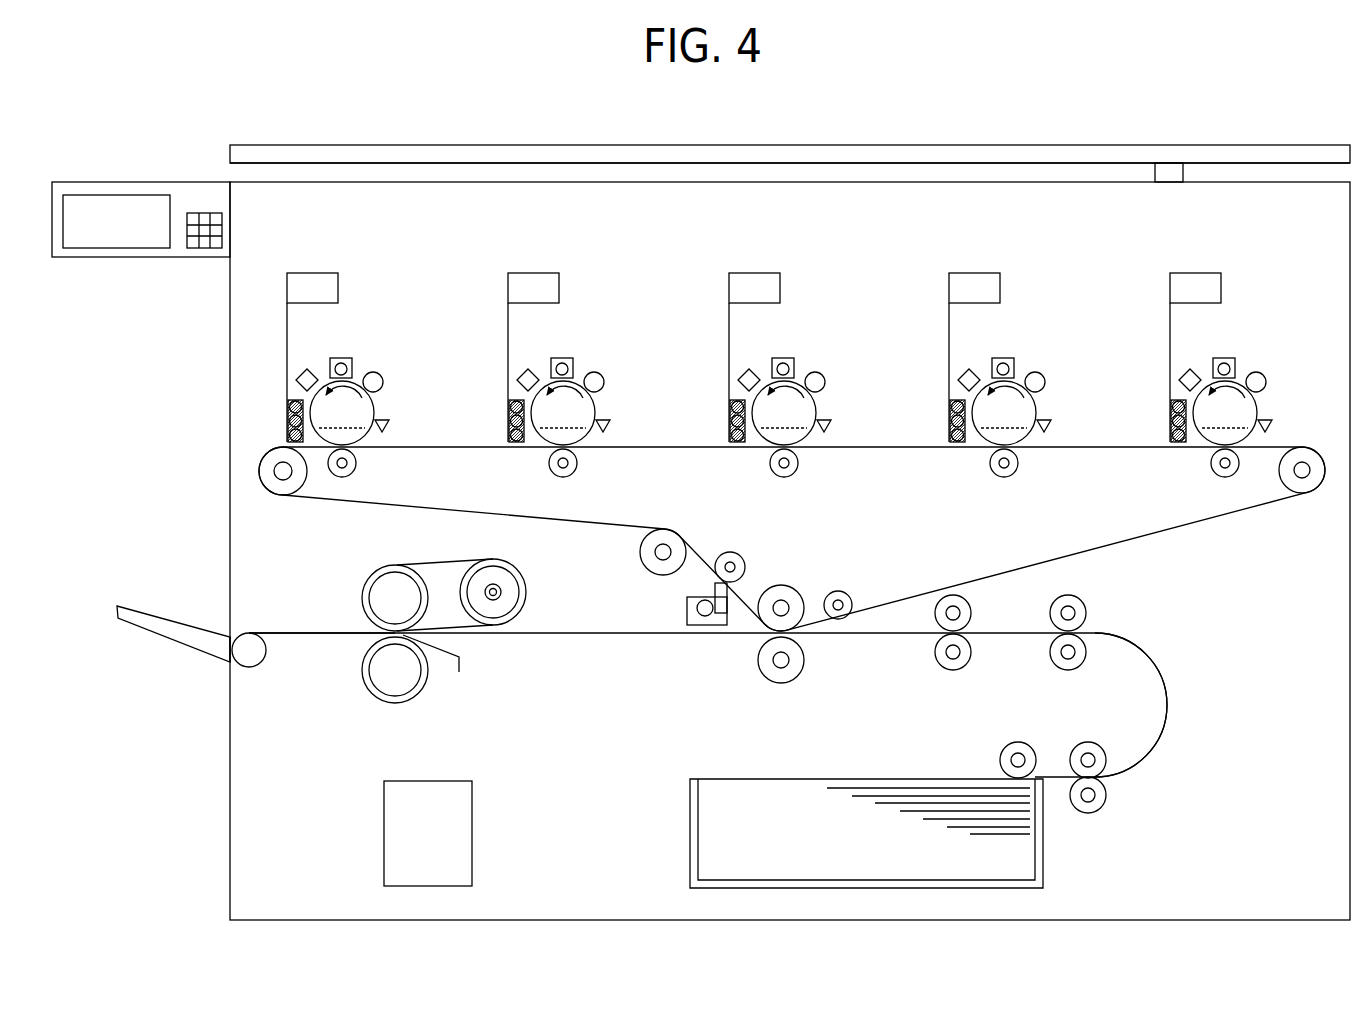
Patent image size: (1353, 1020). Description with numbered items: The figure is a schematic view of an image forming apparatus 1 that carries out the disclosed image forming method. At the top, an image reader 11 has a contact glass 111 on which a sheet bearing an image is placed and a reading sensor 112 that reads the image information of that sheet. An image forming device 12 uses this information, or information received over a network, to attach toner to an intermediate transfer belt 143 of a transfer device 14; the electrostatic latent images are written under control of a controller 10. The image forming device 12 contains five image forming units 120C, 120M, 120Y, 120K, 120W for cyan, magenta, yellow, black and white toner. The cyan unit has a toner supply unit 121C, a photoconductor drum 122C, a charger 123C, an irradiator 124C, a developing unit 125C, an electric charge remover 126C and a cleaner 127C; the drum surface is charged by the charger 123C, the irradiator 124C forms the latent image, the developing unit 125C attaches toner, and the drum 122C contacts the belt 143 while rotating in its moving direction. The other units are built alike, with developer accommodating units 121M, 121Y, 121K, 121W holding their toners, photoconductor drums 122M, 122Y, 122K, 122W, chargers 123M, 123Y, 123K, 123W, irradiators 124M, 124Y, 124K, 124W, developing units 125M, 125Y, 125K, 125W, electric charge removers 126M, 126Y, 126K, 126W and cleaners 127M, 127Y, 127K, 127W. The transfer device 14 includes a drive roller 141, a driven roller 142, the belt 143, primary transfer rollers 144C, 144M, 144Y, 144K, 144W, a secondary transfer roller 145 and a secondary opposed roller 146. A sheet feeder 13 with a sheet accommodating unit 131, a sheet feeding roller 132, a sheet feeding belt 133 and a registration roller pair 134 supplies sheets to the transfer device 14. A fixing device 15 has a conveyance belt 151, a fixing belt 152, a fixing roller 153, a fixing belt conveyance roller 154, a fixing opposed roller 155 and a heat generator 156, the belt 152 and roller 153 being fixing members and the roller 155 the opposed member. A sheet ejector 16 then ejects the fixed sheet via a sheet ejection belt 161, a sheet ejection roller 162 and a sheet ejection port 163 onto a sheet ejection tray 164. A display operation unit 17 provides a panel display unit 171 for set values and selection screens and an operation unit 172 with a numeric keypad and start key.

The image forming apparatus 1 is at (910, 121).
The controller 10 is at (384, 832).
The image reader 11 is at (1155, 100).
The contact glass 111 is at (1088, 184).
The reading sensor 112 is at (1156, 166).
The image forming device 12 is at (630, 252).
The image forming unit 120C is at (410, 322).
The image forming unit 120M is at (631, 322).
The image forming unit 120Y is at (852, 322).
The image forming unit 120K is at (1072, 322).
The image forming unit 120W is at (1285, 322).
The toner supply unit 121C is at (338, 278).
The developer accommodating unit 121M is at (534, 272).
The developer accommodating unit 121Y is at (755, 272).
The developer accommodating unit 121K is at (975, 272).
The developer accommodating unit 121W is at (1196, 272).
The photoconductor drum 122C is at (342, 413).
The photoconductor drum 122M is at (563, 413).
The photoconductor drum 122Y is at (784, 413).
The photoconductor drum 122K is at (1004, 413).
The photoconductor drum 122W is at (1225, 413).
The charger 123C is at (341, 357).
The charger 123M is at (562, 357).
The charger 123Y is at (783, 357).
The charger 123K is at (1003, 357).
The charger 123W is at (1224, 357).
The irradiator 124C is at (320, 375).
The irradiator 124M is at (541, 375).
The irradiator 124Y is at (762, 375).
The irradiator 124K is at (982, 375).
The irradiator 124W is at (1203, 375).
The developing unit 125C is at (288, 433).
The developing unit 125M is at (509, 434).
The developing unit 125Y is at (730, 434).
The developing unit 125K is at (950, 434).
The developing unit 125W is at (1171, 434).
The electric charge remover 126C is at (386, 418).
The electric charge remover 126M is at (607, 418).
The electric charge remover 126Y is at (828, 418).
The electric charge remover 126K is at (1048, 418).
The electric charge remover 126W is at (1269, 418).
The cleaner 127C is at (384, 380).
The cleaner 127M is at (605, 380).
The cleaner 127Y is at (826, 380).
The cleaner 127K is at (1046, 380).
The cleaner 127W is at (1267, 380).
The sheet feeder 13 is at (1073, 838).
The sheet accommodating unit 131 is at (690, 840).
The sheet feeding roller 132 is at (1017, 742).
The sheet feeding belt 133 is at (1170, 705).
The registration roller pair 134 is at (955, 671).
The transfer device 14 is at (741, 657).
The drive roller 141 is at (1312, 496).
The driven roller 142 is at (283, 496).
The intermediate transfer belt 143 is at (1150, 540).
The primary transfer roller 144C is at (356, 463).
The primary transfer roller 144M is at (577, 463).
The primary transfer roller 144Y is at (798, 463).
The primary transfer roller 144K is at (1018, 463).
The primary transfer roller 144W is at (1211, 463).
The secondary transfer roller 145 is at (785, 586).
The secondary opposed roller 146 is at (782, 684).
The fixing device 15 is at (445, 673).
The conveyance belt 151 is at (595, 636).
The fixing belt 152 is at (433, 562).
The fixing roller 153 is at (362, 600).
The fixing belt conveyance roller 154 is at (527, 595).
The fixing opposed roller 155 is at (398, 703).
The heat generator 156 is at (500, 588).
The sheet ejector 16 is at (191, 711).
The sheet ejection belt 161 is at (310, 635).
The sheet ejection roller 162 is at (253, 668).
The sheet ejection port 163 is at (228, 628).
The sheet ejection tray 164 is at (146, 633).
The display operation unit 17 is at (64, 182).
The panel display unit 171 is at (131, 195).
The operation unit 172 is at (200, 258).